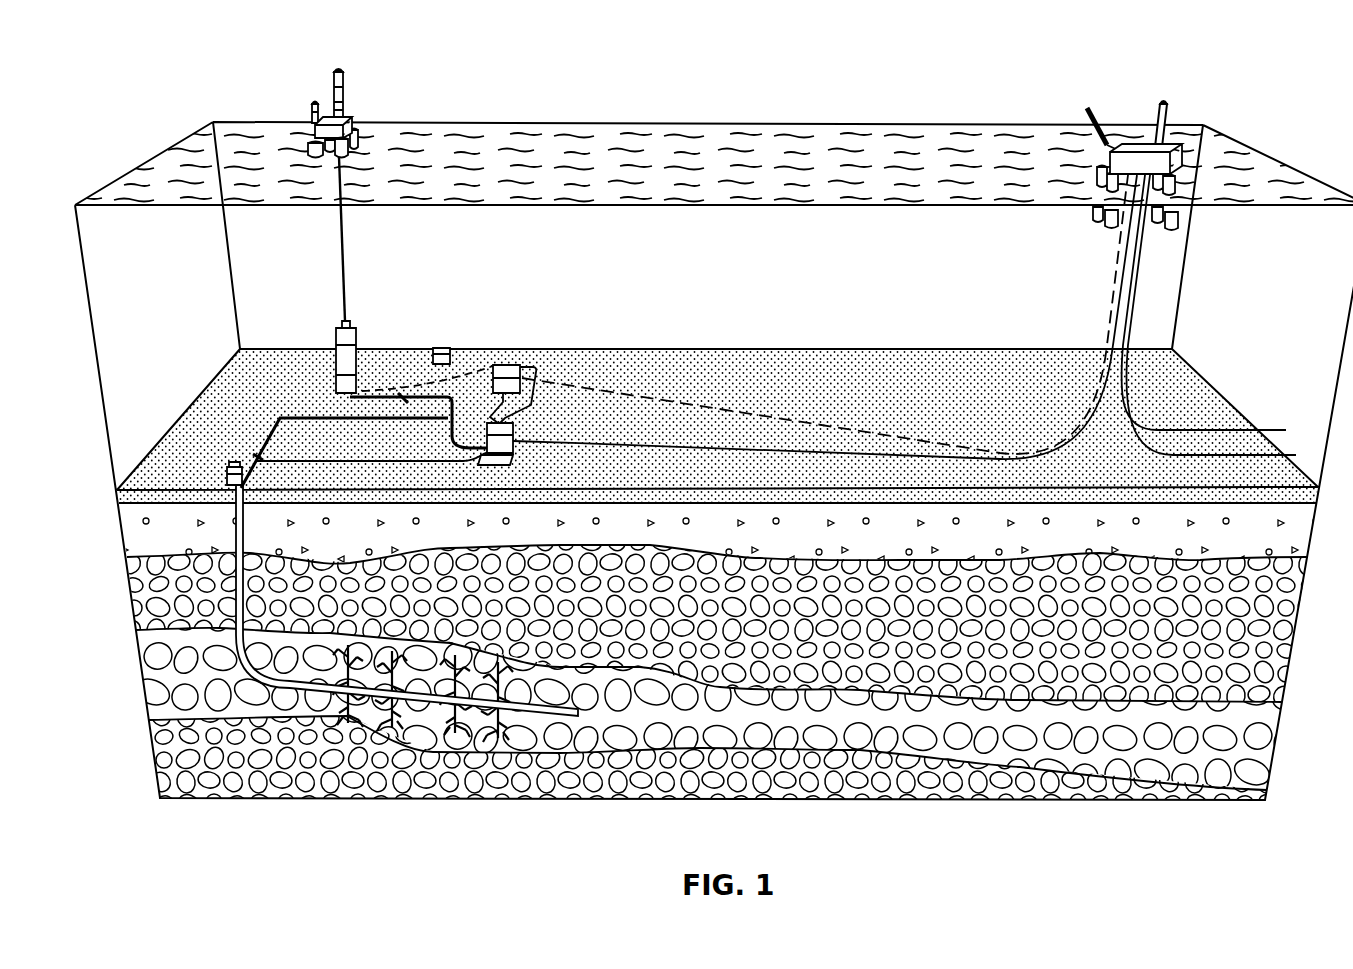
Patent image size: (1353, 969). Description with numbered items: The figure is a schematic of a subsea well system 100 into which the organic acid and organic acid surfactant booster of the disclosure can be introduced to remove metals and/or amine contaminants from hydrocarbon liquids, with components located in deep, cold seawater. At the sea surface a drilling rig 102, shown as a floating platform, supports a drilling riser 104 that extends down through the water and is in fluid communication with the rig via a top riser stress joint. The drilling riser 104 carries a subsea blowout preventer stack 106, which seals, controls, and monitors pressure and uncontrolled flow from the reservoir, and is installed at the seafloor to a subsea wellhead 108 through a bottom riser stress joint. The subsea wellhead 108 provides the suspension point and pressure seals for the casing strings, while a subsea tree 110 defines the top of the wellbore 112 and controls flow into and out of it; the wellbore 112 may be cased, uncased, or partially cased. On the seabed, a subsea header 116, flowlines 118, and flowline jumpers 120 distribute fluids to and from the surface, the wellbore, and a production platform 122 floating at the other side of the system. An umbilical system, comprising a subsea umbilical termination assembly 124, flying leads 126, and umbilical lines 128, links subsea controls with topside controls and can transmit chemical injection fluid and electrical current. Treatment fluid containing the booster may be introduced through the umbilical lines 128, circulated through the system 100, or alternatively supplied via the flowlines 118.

The well system 100 is at (988, 64).
The drilling rig 102 is at (337, 88).
The drilling riser 104 is at (344, 252).
The subsea blowout preventer stack 106 is at (345, 378).
The subsea wellhead 108 is at (442, 349).
The subsea tree 110 is at (226, 476).
The wellbore 112 is at (237, 572).
The subsea header 116 is at (515, 456).
The flowline 118 is at (676, 444).
The flowline jumper 120 is at (368, 463).
The production platform 122 is at (1167, 114).
The subsea umbilical termination assembly 124 is at (511, 370).
The flying lead 126 is at (280, 416).
The umbilical line 128 is at (404, 398).